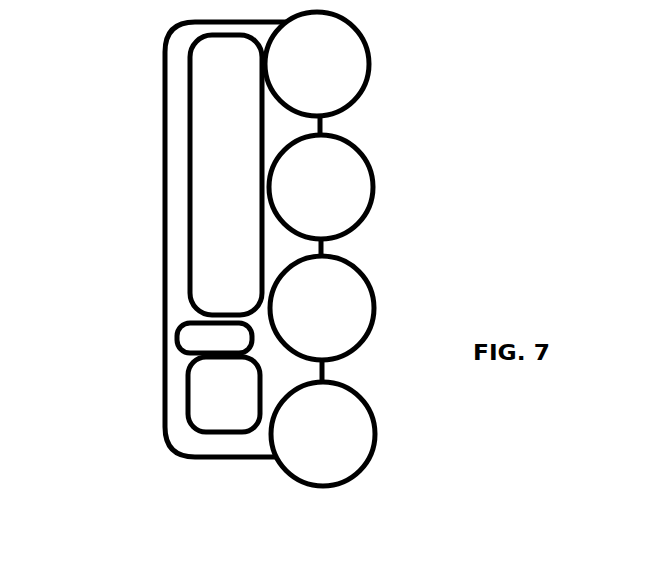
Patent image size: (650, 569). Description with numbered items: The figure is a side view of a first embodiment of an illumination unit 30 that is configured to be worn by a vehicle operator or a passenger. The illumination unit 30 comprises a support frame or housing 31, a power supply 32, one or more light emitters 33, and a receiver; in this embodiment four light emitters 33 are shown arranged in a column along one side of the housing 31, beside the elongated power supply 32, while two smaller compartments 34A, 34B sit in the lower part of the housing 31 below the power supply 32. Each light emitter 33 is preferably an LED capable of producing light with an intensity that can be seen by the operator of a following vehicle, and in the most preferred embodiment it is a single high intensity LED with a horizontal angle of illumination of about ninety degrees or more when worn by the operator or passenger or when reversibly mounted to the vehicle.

The illumination unit 30 is at (132, 186).
The support frame or housing 31 is at (155, 59).
The power supply 32 is at (196, 256).
The light emitter 33 is at (378, 155).
The lower sub-compartment 34A is at (199, 400).
The upper sub-compartment 34B is at (166, 348).